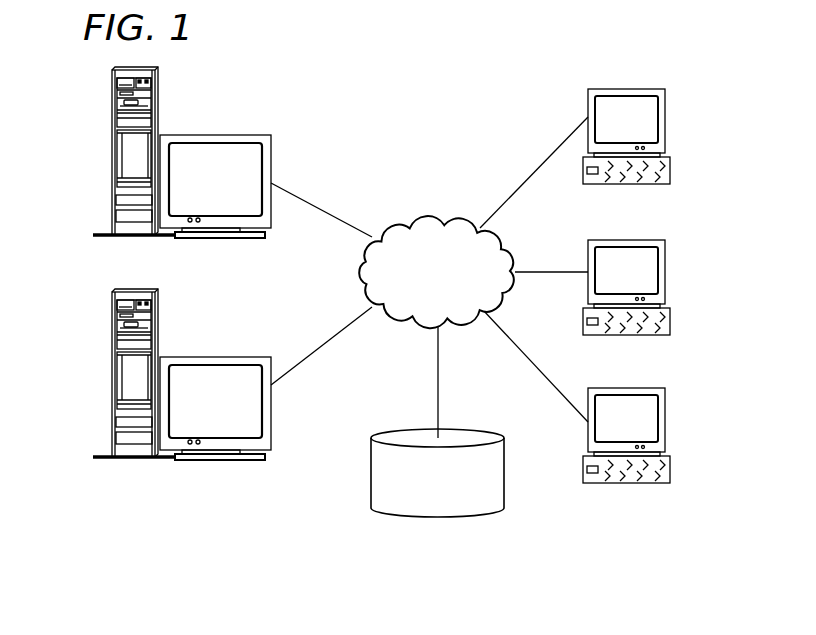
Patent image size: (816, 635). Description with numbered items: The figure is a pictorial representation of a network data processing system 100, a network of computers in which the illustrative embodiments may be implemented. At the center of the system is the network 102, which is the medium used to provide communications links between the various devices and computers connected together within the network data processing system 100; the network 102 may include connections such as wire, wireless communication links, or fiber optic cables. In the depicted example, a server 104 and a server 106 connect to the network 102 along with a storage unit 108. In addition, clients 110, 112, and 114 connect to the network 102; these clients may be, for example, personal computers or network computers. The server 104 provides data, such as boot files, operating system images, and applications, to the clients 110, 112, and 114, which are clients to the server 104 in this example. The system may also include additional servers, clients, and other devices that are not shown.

The network data processing system 100 is at (494, 96).
The network 102 is at (406, 222).
The server 104 is at (112, 153).
The server 106 is at (112, 382).
The storage unit 108 is at (417, 517).
The client 110 is at (665, 120).
The client 112 is at (665, 272).
The client 114 is at (665, 420).